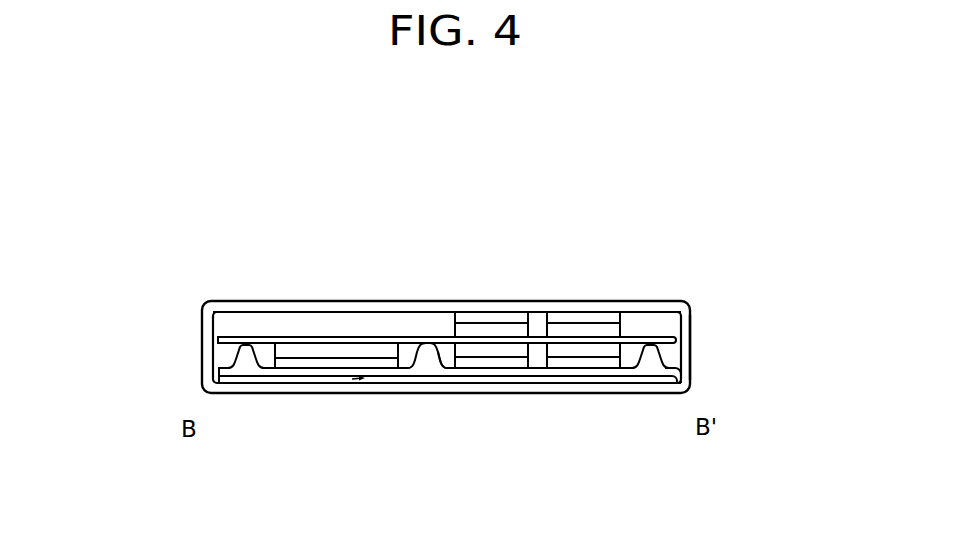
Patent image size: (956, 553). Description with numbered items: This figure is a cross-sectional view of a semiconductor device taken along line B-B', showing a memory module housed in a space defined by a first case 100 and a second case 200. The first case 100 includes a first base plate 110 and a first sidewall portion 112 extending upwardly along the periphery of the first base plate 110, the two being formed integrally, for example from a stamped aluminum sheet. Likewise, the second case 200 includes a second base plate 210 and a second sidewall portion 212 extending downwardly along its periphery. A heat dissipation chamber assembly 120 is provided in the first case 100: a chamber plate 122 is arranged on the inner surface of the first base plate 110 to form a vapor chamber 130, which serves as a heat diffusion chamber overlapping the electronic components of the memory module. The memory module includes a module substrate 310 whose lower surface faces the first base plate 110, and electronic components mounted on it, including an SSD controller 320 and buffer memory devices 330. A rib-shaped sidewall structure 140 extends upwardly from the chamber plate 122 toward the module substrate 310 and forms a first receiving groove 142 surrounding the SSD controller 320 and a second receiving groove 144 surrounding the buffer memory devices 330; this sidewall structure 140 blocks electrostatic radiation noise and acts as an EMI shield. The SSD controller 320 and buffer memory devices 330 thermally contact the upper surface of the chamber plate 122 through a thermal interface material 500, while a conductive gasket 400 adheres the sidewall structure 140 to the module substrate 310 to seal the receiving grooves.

The first case 100 is at (394, 410).
The first base plate 110 is at (278, 387).
The first sidewall portion 112 is at (205, 376).
The heat dissipation chamber assembly 120 is at (240, 392).
The chamber plate 122 is at (320, 372).
The vapor chamber 130 is at (360, 380).
The sidewall structure 140 is at (249, 352).
The first receiving groove 142 is at (402, 375).
The second receiving groove 144 is at (452, 374).
The second case 200 is at (189, 296).
The second base plate 210 is at (422, 303).
The second sidewall portion 212 is at (690, 325).
The module substrate 310 is at (677, 341).
The SSD controller 320 is at (358, 349).
The buffer memory devices 330 is at (567, 327).
The conductive gasket 400 is at (649, 346).
The thermal interface material 500 is at (300, 362).